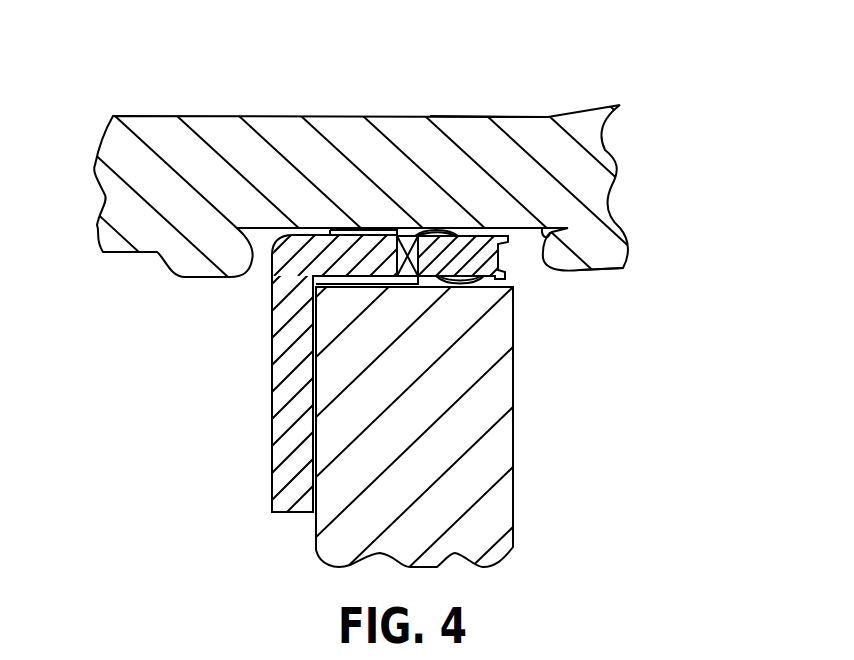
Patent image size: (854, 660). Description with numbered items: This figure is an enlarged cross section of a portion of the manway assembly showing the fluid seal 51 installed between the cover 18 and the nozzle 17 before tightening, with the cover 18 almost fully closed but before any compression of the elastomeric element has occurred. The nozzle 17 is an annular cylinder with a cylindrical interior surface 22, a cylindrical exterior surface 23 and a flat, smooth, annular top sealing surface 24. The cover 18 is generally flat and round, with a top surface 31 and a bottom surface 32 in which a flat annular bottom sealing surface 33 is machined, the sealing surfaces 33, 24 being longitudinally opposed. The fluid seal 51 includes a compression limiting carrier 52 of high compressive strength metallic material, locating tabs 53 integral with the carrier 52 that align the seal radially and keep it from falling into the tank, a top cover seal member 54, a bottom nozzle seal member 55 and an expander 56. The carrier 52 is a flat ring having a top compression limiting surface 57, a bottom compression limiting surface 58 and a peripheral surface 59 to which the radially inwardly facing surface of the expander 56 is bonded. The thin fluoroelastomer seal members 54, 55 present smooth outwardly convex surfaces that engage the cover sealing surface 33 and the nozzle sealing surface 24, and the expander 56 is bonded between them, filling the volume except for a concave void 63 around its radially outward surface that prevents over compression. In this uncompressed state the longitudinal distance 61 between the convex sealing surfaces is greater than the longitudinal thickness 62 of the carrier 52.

The nozzle 17 is at (424, 434).
The cover 18 is at (597, 152).
The interior surface 22 is at (316, 545).
The exterior surface 23 is at (513, 473).
The top sealing surface 24 is at (306, 274).
The top surface 31 is at (538, 117).
The bottom surface 32 is at (610, 271).
The bottom annular sealing surface 33 is at (546, 237).
The fluid seal 51 is at (273, 398).
The compression limiting carrier 52 is at (352, 243).
The locating tabs 53 is at (283, 473).
The top cover seal member 54 is at (487, 237).
The bottom nozzle seal member 55 is at (488, 288).
The expander 56 is at (383, 281).
The top compression limiting surface 57 is at (362, 233).
The bottom compression limiting surface 58 is at (338, 280).
The peripheral surface 59 is at (410, 237).
The longitudinal distance 61 is at (447, 229).
The longitudinal thickness 62 is at (382, 233).
The concave void 63 is at (503, 252).